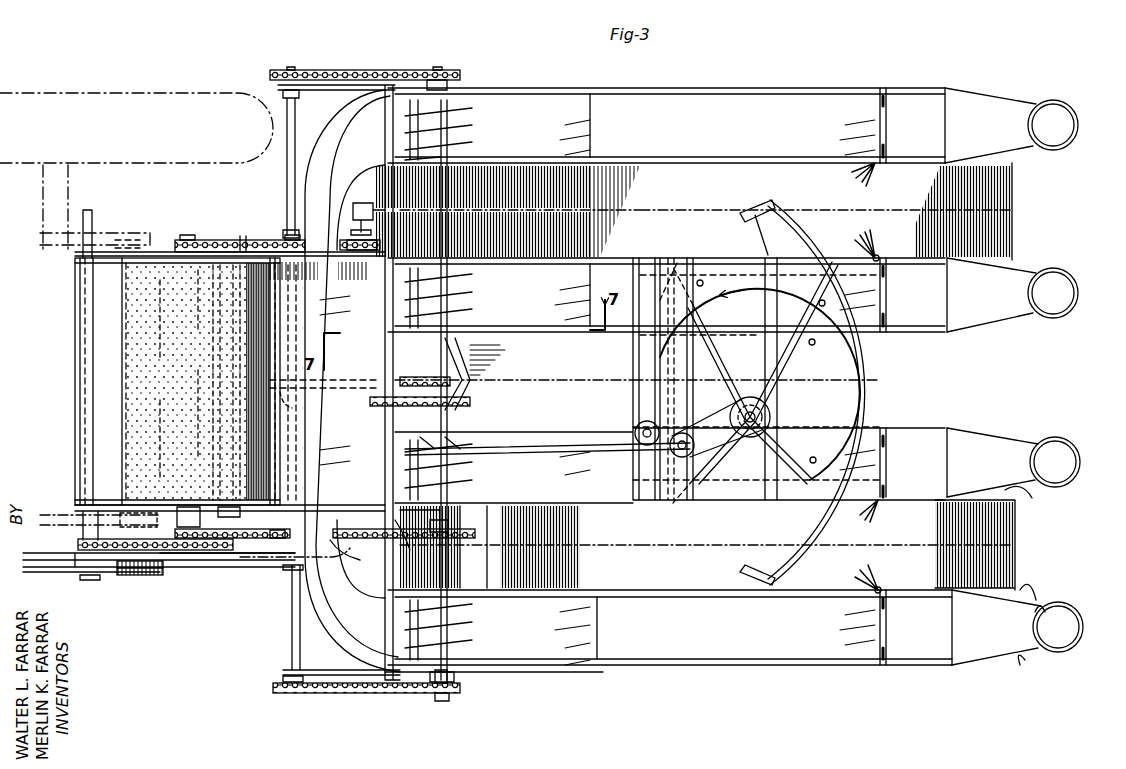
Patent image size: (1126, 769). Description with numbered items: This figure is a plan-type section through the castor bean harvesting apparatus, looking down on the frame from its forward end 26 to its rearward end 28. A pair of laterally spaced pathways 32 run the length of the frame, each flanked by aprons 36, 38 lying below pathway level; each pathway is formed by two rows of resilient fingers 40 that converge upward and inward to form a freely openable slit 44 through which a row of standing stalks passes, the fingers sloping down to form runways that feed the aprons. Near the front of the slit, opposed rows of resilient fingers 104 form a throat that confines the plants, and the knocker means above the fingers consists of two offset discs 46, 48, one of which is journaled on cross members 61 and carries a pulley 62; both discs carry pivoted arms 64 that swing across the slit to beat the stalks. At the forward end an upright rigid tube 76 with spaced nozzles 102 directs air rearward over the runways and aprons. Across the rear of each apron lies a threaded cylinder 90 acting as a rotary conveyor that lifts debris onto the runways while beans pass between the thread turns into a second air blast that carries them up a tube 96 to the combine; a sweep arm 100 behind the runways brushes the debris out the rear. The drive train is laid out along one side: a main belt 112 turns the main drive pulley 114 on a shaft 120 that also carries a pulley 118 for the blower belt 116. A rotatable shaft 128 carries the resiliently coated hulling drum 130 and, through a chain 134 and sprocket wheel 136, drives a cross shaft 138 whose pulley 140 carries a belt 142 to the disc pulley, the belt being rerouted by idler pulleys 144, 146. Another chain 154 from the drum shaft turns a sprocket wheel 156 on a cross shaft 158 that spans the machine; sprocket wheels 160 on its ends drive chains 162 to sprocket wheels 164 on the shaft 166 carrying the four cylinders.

The forward end 26 is at (1076, 110).
The rearward end 28 is at (72, 310).
The pathways 32 is at (1014, 207).
The apron 36 is at (973, 648).
The apron 38 is at (880, 428).
The resilient fingers 40 is at (1012, 556).
The slit 44 is at (902, 548).
The disc 46 is at (835, 258).
The disc 48 is at (840, 385).
The cross members 61 is at (772, 368).
The pulley 62 is at (772, 430).
The arms 64 is at (750, 205).
The rigid tube 76 is at (1063, 652).
The cylinder 90 is at (465, 144).
The tube 96 is at (345, 316).
The sweep arm 100 is at (350, 550).
The nozzles 102 is at (1035, 615).
The resilient fingers 104 is at (866, 570).
The main belt 112 is at (15, 568).
The main drive pulley 114 is at (145, 572).
The belt 116 is at (250, 565).
The pulley 118 is at (175, 570).
The shaft 120 is at (70, 513).
The rotatable shaft 128 is at (178, 500).
The resiliently coated drum 130 is at (195, 404).
The chain 134 is at (440, 545).
The sprocket wheel 136 is at (470, 532).
The cross shaft 138 is at (475, 365).
The pulley 140 is at (480, 445).
The belt 142 is at (560, 447).
The idler pulley 144 is at (645, 420).
The idler pulley 146 is at (693, 428).
The chain 154 is at (218, 238).
The sprocket wheel 156 is at (292, 410).
The cross shaft 158 is at (288, 640).
The sprocket wheels 160 is at (295, 693).
The chains 162 is at (370, 72).
The sprocket wheels 164 is at (455, 695).
The shaft 166 is at (440, 698).